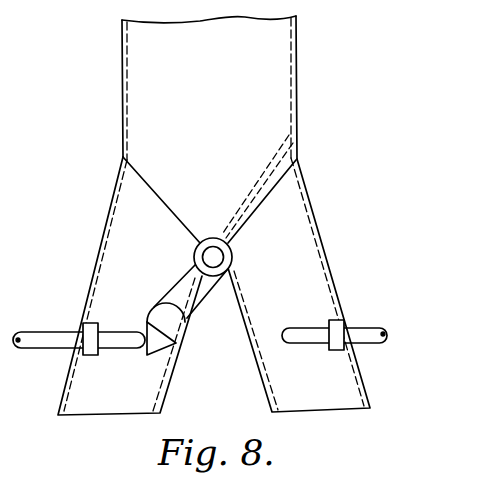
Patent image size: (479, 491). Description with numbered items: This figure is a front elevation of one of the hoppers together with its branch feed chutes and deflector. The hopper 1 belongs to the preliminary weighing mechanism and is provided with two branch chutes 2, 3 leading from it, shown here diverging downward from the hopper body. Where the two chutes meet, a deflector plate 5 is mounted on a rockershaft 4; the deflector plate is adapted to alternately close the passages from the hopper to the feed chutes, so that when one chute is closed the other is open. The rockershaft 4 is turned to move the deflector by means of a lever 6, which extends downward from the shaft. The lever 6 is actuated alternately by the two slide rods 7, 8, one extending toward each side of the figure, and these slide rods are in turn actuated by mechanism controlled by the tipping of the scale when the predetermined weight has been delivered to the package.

The hopper 1 is at (277, 52).
The branch chute 2 is at (115, 406).
The branch chute 3 is at (327, 403).
The rockershaft 4 is at (213, 255).
The deflector plate 5 is at (282, 165).
The lever 6 is at (193, 265).
The slide rod 7 is at (302, 330).
The slide rod 8 is at (113, 332).